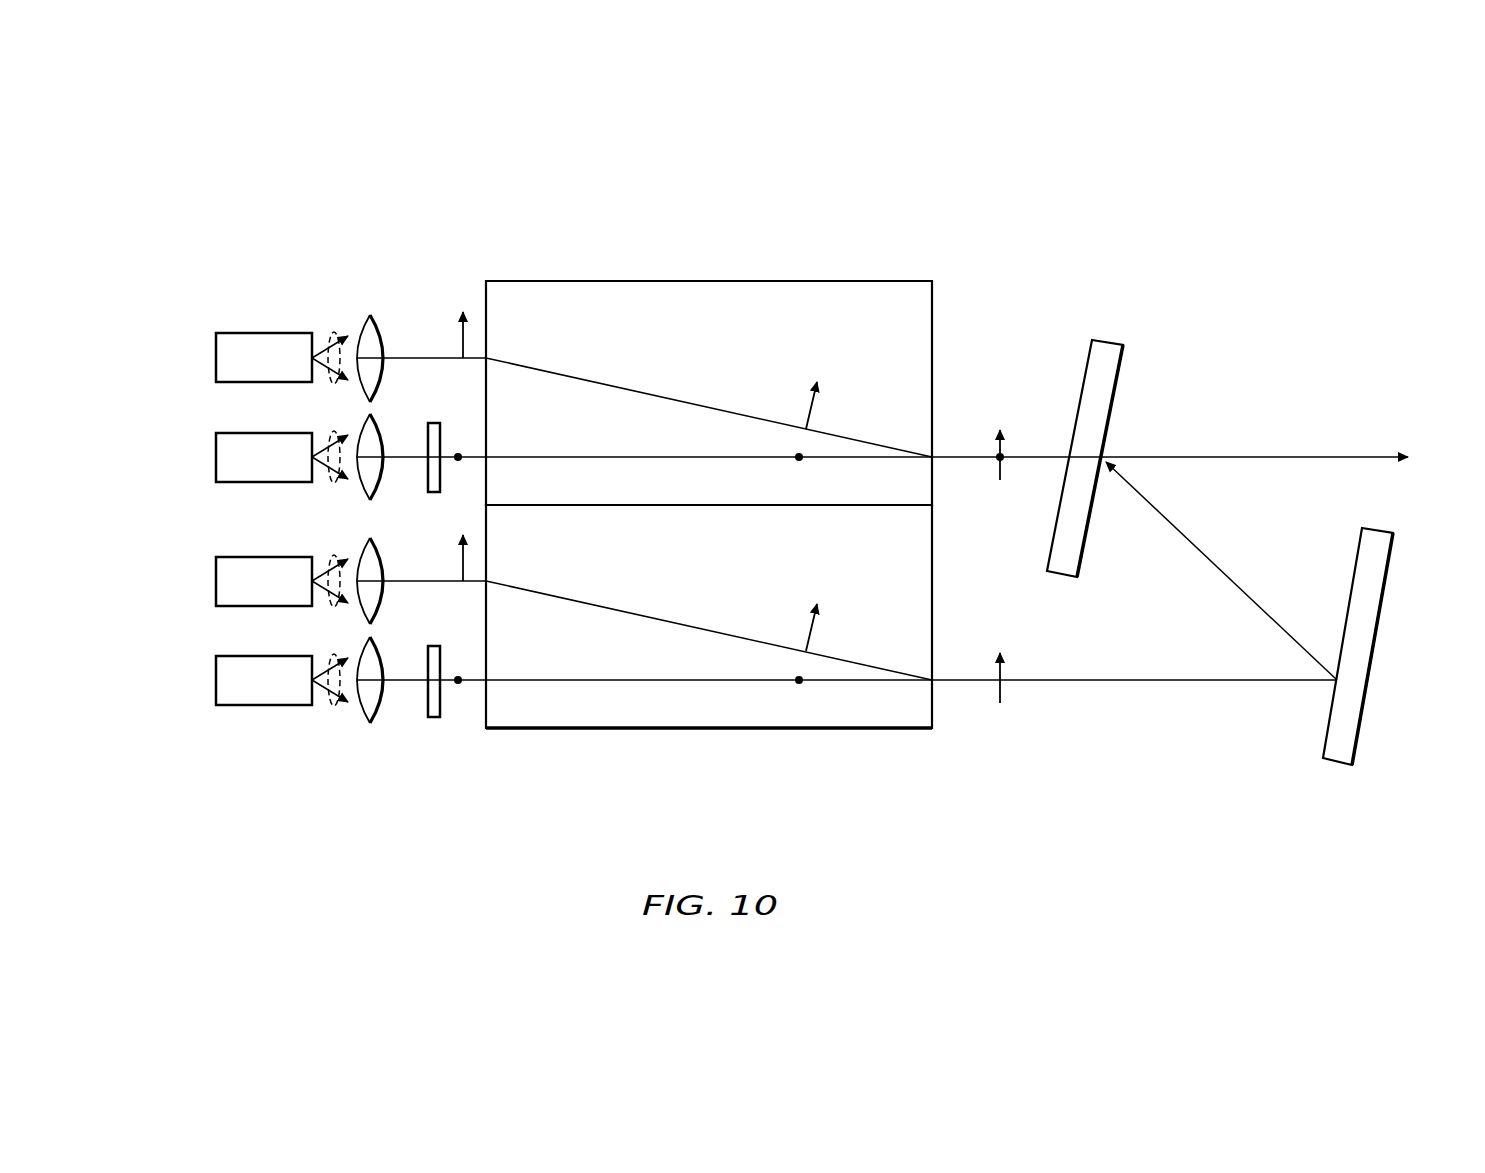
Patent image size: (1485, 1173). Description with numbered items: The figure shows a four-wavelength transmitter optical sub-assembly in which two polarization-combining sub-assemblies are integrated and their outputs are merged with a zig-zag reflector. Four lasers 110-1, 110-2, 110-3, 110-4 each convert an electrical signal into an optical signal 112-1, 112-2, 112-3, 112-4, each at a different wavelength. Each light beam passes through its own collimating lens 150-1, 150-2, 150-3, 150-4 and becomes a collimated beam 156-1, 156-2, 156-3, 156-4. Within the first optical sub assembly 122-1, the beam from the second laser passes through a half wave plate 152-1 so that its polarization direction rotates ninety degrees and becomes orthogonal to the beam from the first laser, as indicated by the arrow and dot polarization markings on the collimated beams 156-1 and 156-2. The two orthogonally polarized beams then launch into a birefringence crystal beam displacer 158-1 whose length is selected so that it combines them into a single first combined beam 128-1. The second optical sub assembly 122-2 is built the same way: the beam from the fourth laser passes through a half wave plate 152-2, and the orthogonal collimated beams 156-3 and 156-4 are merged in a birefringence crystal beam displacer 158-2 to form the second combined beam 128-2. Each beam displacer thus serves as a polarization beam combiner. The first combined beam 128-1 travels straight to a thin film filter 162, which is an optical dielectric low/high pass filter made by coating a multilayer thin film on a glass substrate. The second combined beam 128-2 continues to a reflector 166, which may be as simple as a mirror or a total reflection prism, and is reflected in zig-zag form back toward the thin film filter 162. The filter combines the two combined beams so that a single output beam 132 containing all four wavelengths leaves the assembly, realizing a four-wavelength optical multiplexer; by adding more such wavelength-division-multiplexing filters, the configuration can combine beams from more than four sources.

The laser 110-1 is at (215, 358).
The laser 110-2 is at (215, 457).
The laser 110-3 is at (215, 581).
The laser 110-4 is at (215, 680).
The optical signal 112-1 is at (335, 332).
The optical signal 112-2 is at (333, 484).
The optical signal 112-3 is at (333, 608).
The optical signal 112-4 is at (333, 708).
The collimating lens 150-1 is at (383, 332).
The collimating lens 150-2 is at (365, 418).
The collimating lens 150-3 is at (364, 543).
The collimating lens 150-4 is at (362, 716).
The half wave plate 152-1 is at (428, 474).
The half wave plate 152-2 is at (428, 712).
The collimated beam 156-1 is at (410, 357).
The collimated beam 156-2 is at (473, 453).
The collimated beam 156-3 is at (420, 583).
The collimated beam 156-4 is at (470, 684).
The first optical sub assembly 122-1 is at (709, 332).
The second optical sub assembly 122-2 is at (709, 680).
The birefringence crystal beam displacer 158-1 is at (832, 280).
The birefringence crystal beam displacer 158-2 is at (825, 730).
The first combined beam 128-1 is at (1037, 455).
The second combined beam 128-2 is at (1133, 682).
The output beam 132 is at (1242, 455).
The thin film filter 162 is at (1088, 368).
The reflector 166 is at (1377, 647).